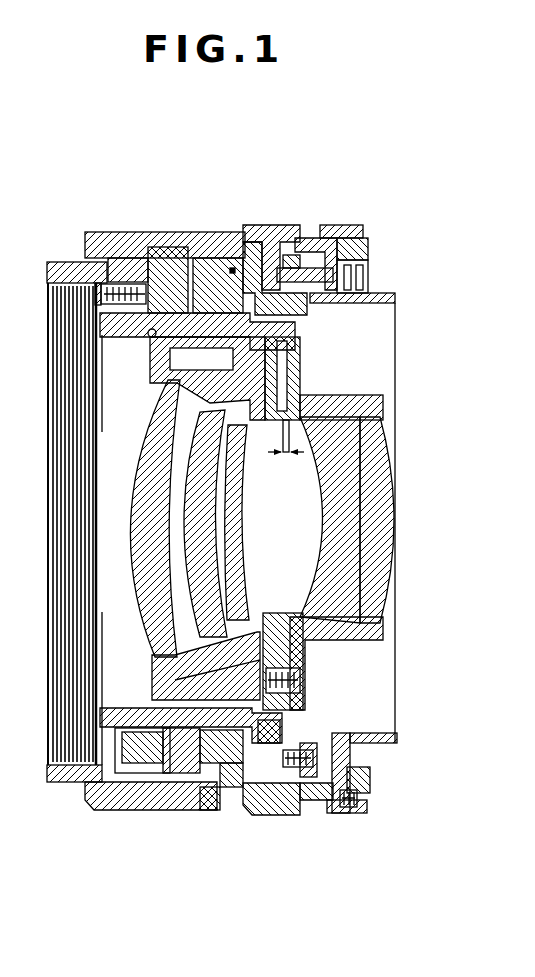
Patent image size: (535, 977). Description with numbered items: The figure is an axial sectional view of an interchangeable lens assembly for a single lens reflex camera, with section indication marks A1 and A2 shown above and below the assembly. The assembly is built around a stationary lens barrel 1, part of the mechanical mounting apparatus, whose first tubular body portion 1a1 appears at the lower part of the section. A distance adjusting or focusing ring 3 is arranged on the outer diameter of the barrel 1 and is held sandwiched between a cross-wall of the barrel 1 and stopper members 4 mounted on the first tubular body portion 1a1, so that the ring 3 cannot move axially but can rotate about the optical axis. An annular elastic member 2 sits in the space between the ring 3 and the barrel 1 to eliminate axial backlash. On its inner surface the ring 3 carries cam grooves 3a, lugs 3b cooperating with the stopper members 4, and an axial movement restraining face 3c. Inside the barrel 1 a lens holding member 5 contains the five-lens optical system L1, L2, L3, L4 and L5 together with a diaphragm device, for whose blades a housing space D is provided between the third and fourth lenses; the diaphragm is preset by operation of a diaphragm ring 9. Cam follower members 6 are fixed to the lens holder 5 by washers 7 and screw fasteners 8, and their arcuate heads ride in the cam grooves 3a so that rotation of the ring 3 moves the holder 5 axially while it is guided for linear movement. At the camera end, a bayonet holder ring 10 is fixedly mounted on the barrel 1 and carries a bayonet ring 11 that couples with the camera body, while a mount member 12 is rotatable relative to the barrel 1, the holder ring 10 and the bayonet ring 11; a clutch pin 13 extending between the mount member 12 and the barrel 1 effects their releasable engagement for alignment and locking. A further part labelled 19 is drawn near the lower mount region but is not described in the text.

The lens barrel 1 is at (238, 250).
The first tubular body portion 1a1 is at (226, 775).
The annular elastic member 2 is at (250, 282).
The distance adjusting ring 3 is at (120, 246).
The cam grooves 3a is at (190, 262).
The lugs 3b is at (220, 240).
The axial movement restraining face 3c is at (203, 760).
The stopper members 4 is at (170, 768).
The lens holding member 5 is at (55, 270).
The cam follower members 6 is at (158, 258).
The washers 7 is at (108, 286).
The screw fasteners 8 is at (78, 283).
The diaphragm ring 9 is at (280, 237).
The bayonet holder ring 10 is at (352, 228).
The bayonet ring 11 is at (370, 250).
The mount member 12 is at (397, 298).
The clutch pin 13 is at (312, 284).
The fixing screw 19 is at (222, 752).
The housing space D is at (286, 456).
The first lens L1 is at (160, 428).
The second lens L2 is at (178, 546).
The third lens L3 is at (240, 530).
The fourth lens L4 is at (335, 530).
The fifth lens L5 is at (385, 552).
The section arrow A1 is at (175, 898).
The section arrow A2 is at (170, 185).